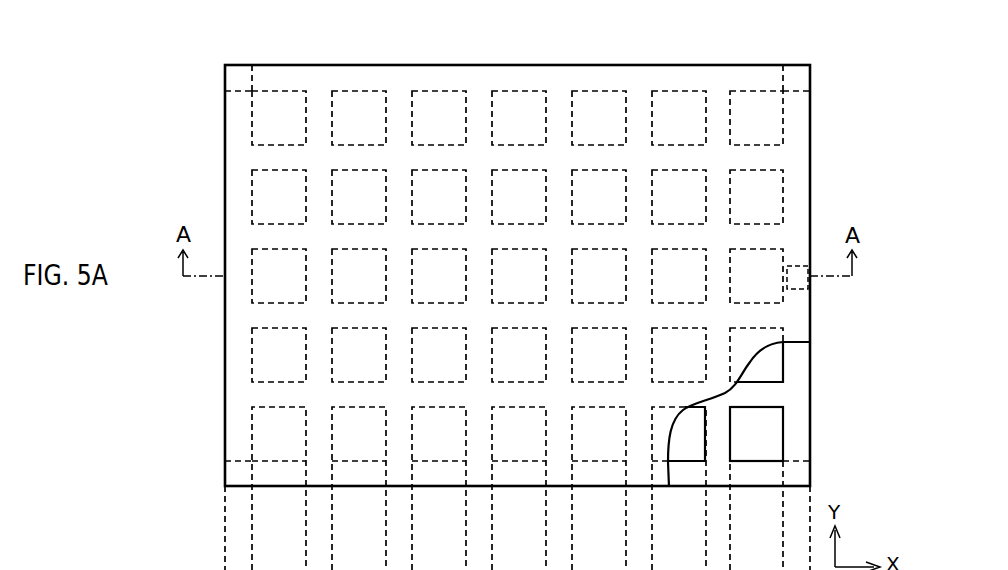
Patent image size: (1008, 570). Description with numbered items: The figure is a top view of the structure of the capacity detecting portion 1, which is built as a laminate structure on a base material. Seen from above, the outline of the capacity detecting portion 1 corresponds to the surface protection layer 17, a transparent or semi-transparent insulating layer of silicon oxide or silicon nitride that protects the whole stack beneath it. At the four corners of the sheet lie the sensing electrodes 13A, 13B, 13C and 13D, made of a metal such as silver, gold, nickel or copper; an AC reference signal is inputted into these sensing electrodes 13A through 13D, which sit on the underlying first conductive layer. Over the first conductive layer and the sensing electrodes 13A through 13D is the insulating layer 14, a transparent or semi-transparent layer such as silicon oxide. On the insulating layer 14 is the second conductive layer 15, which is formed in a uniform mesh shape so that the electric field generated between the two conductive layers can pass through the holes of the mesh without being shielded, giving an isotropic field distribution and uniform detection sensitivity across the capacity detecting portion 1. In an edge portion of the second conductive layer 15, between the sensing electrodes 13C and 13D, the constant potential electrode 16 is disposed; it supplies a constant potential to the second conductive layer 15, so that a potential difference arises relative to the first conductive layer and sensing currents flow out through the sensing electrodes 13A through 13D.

The capacity detecting portion 1 is at (801, 47).
The sensing electrode 13A is at (240, 79).
The sensing electrode 13B is at (240, 473).
The sensing electrode 13C is at (795, 474).
The sensing electrode 13D is at (795, 80).
The insulating layer 14 is at (752, 433).
The second conductive layer 15 is at (795, 394).
The constant potential electrode 16 is at (806, 287).
The surface protection layer 17 is at (796, 117).